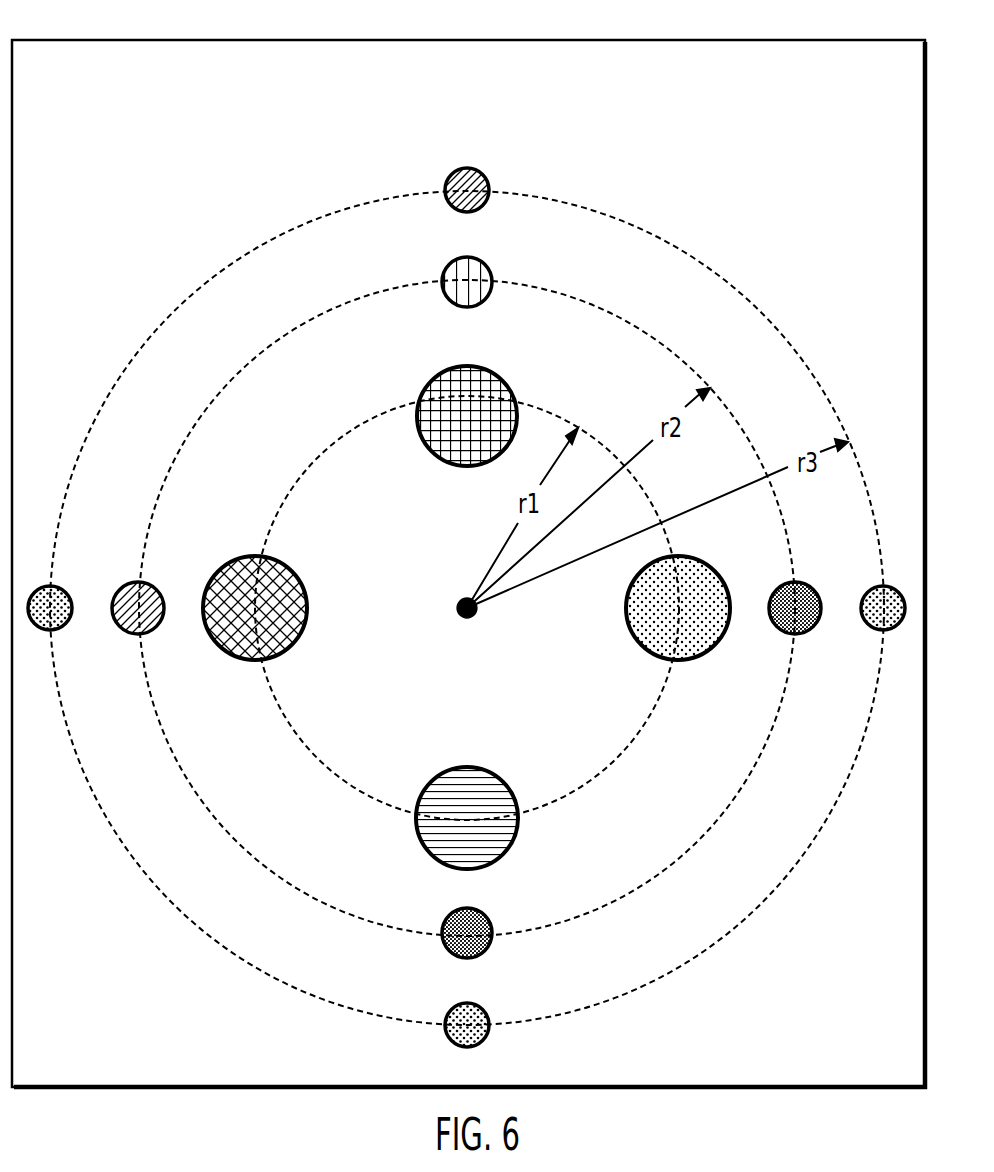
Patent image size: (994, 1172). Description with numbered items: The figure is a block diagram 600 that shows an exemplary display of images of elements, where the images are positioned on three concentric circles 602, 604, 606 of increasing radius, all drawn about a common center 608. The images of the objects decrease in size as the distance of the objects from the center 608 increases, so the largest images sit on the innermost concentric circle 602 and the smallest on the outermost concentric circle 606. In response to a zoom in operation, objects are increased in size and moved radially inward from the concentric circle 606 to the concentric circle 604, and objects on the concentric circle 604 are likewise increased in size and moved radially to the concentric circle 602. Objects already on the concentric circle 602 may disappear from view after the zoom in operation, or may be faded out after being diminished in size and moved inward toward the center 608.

The block diagram 600 is at (68, 40).
The concentric circle 602 is at (546, 410).
The concentric circle 604 is at (578, 300).
The concentric circle 606 is at (613, 218).
The center 608 is at (457, 607).